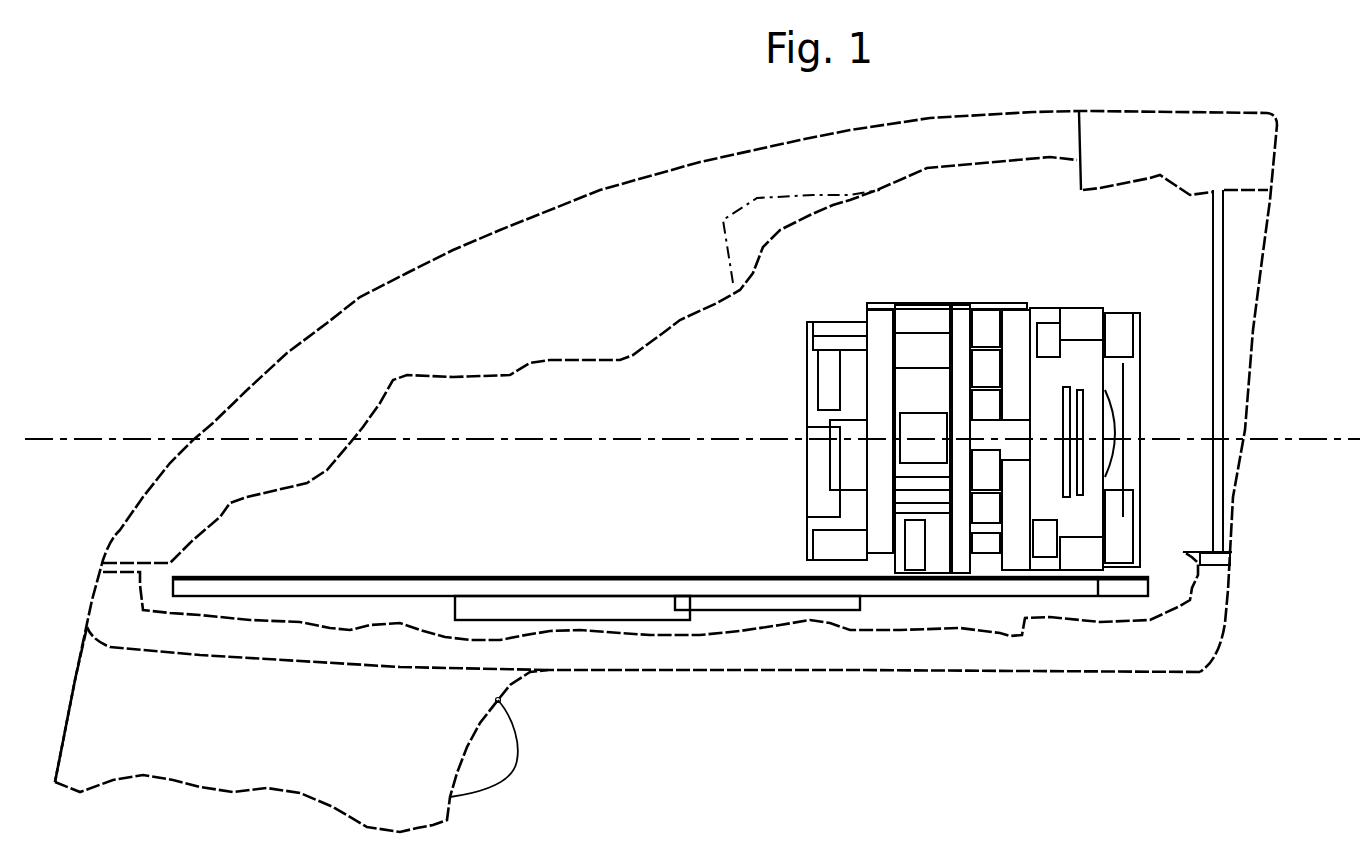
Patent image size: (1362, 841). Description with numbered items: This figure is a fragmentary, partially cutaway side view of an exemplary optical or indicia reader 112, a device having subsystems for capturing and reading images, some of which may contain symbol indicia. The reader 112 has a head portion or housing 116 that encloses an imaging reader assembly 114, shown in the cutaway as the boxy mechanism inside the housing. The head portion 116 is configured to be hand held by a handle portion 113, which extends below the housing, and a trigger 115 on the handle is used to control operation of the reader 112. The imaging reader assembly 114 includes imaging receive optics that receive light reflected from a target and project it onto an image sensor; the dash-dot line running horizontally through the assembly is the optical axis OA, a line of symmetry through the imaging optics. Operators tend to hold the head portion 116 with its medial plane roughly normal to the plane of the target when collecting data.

The optical or indicia reader 112 is at (497, 178).
The handle portion 113 is at (281, 730).
The imaging reader assembly 114 is at (997, 284).
The trigger 115 is at (517, 758).
The head portion or housing 116 is at (328, 320).
The optical axis OA is at (1268, 437).